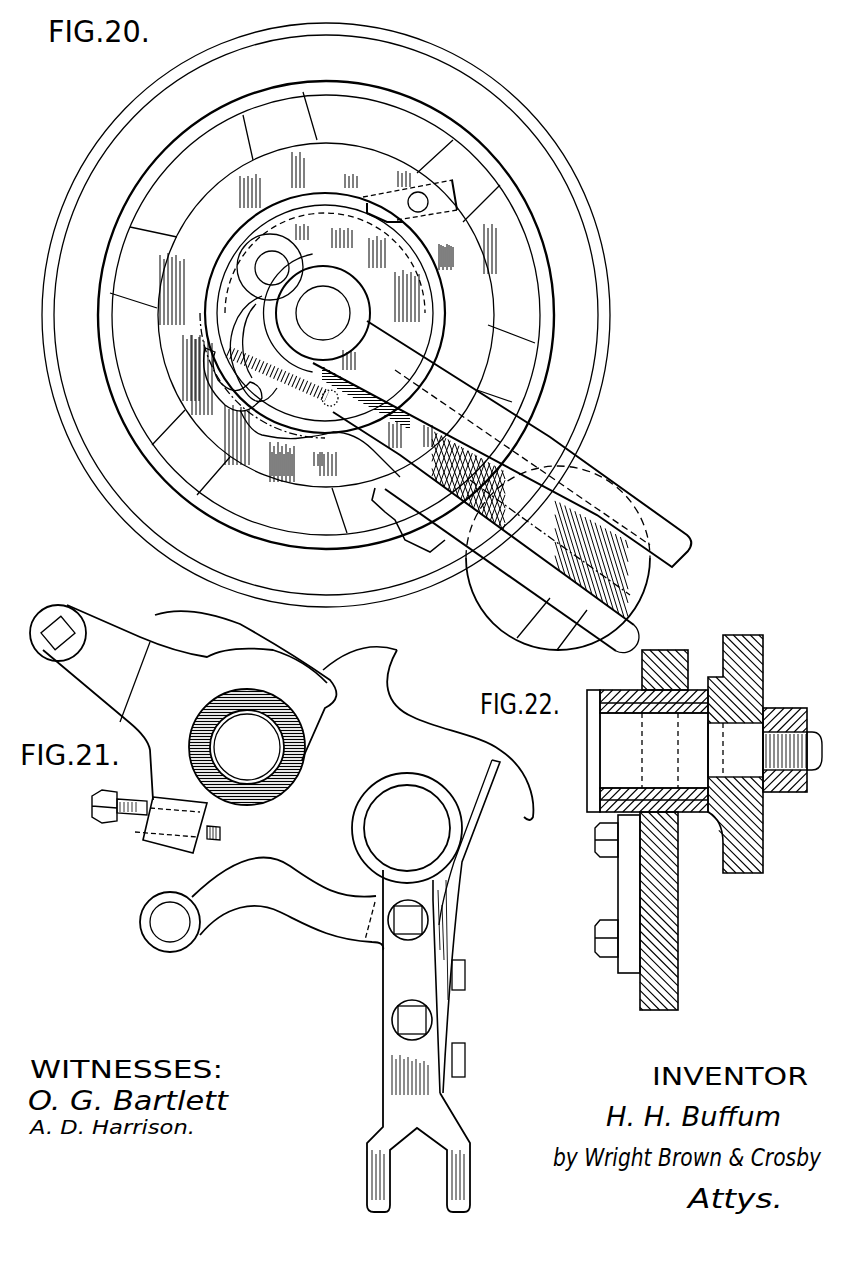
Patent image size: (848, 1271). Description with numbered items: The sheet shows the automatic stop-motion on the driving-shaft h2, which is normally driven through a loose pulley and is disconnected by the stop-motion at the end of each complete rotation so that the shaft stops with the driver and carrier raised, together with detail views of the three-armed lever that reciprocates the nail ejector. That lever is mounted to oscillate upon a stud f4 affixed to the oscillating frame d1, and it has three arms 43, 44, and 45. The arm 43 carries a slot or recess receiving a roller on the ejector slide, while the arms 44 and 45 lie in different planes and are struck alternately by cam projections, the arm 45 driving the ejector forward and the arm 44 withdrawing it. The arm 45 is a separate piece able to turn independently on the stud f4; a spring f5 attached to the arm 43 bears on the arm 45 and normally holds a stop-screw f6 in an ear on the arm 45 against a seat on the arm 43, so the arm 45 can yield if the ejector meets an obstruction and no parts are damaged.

In FIG. 20, the driving-shaft h2 is at (317, 313).
In FIG. 21, the lever arm 45 is at (187, 668).
In FIG. 22, the lever arm 45 is at (688, 687).
In FIG. 21, the stop-screw f6 is at (217, 836).
In FIG. 21, the spring f5 is at (470, 823).
In FIG. 22, the stud f4 is at (654, 750).
In FIG. 21, the lever arm 44 is at (298, 908).
In FIG. 22, the lever arm 44 is at (618, 863).
In FIG. 21, the lever arm 43 is at (407, 1067).
In FIG. 22, the lever arm 43 is at (660, 915).
In FIG. 22, the oscillating frame d1 is at (762, 823).